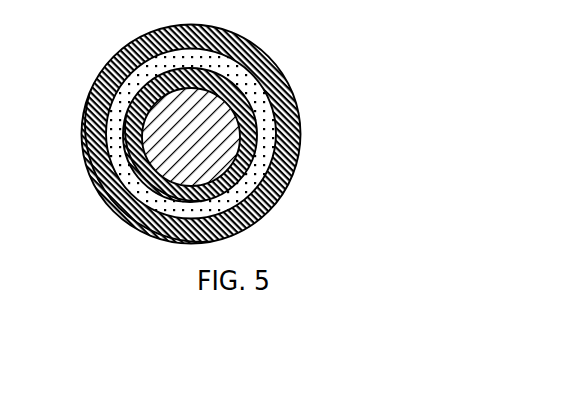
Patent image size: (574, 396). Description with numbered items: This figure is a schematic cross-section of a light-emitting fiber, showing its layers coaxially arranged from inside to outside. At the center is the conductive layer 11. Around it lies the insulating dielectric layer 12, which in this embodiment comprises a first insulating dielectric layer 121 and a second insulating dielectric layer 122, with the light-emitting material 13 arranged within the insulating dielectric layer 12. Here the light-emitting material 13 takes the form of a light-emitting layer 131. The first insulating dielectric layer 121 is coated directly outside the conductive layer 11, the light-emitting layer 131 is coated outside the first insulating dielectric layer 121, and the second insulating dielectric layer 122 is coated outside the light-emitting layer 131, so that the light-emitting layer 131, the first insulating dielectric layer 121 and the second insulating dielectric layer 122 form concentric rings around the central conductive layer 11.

The conductive layer 11 is at (237, 146).
The insulating dielectric layer 12 is at (259, 126).
The first insulating dielectric layer 121 is at (237, 108).
The second insulating dielectric layer 122 is at (257, 52).
The light-emitting material 13 is at (271, 138).
The light-emitting layer 131 is at (233, 198).